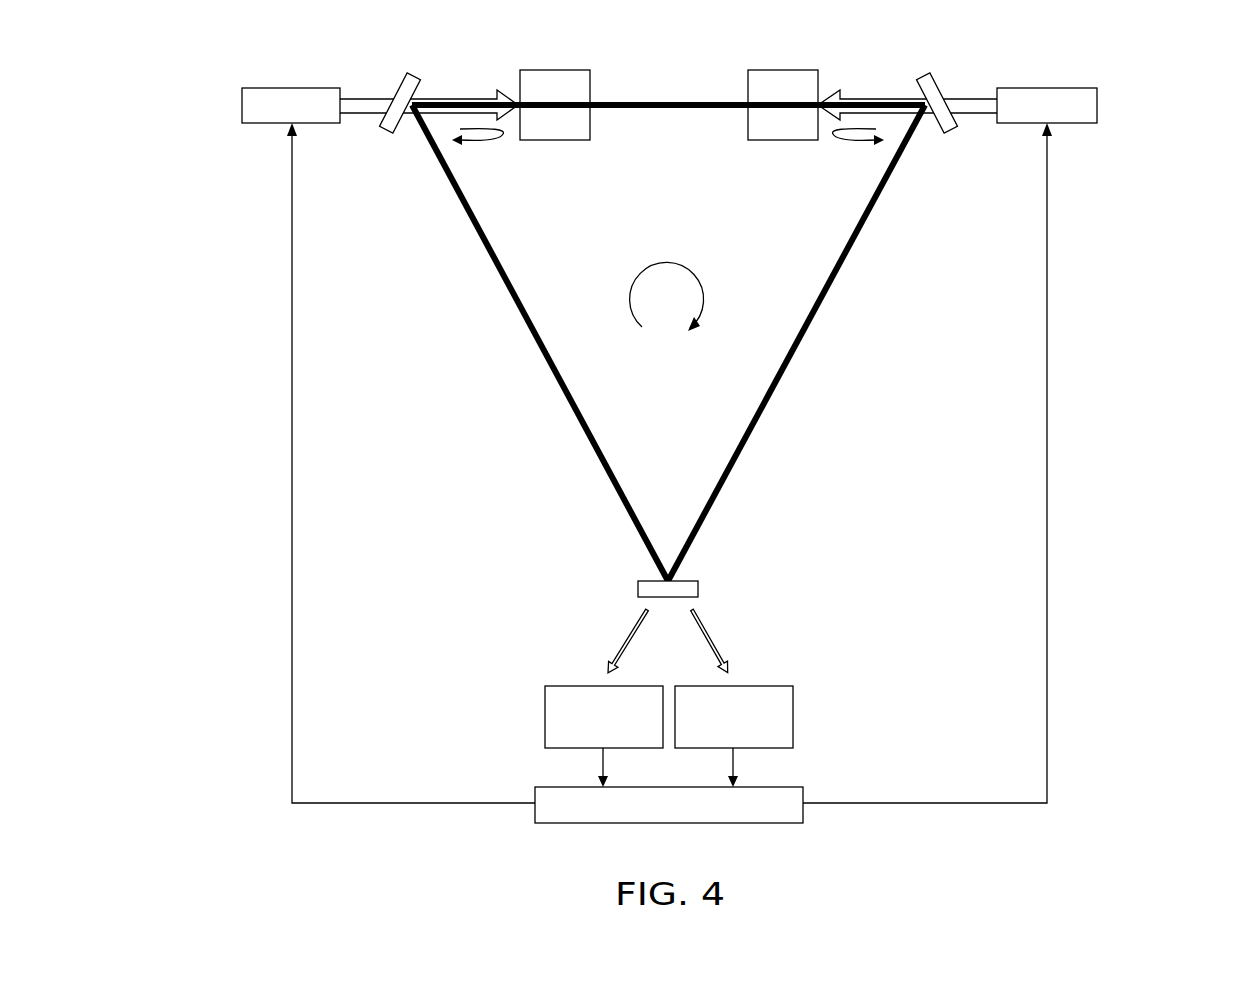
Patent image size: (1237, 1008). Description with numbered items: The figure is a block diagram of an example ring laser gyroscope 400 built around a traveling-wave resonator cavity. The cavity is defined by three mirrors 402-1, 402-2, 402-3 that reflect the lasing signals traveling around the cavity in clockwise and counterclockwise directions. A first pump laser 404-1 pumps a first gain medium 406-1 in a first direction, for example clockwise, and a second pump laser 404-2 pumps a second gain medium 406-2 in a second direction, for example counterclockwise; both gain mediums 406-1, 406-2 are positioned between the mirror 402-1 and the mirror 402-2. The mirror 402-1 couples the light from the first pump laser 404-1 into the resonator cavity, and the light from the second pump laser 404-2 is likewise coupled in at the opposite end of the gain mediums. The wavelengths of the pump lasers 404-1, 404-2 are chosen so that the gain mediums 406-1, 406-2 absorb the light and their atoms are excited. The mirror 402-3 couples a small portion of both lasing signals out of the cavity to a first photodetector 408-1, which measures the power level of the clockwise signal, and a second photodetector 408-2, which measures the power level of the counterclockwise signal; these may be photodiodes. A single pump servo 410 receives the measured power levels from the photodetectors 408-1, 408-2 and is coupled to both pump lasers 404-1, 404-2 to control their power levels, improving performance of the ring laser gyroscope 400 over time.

The ring laser gyroscope 400 is at (228, 46).
The mirror 402-1 is at (387, 133).
The mirror 402-2 is at (950, 133).
The mirror 402-3 is at (638, 590).
The first pump laser 404-1 is at (242, 103).
The second pump laser 404-2 is at (1097, 103).
The first gain medium 406-1 is at (555, 70).
The second gain medium 406-2 is at (783, 70).
The first photodetector 408-1 is at (545, 717).
The second photodetector 408-2 is at (793, 717).
The pump servo 410 is at (803, 800).